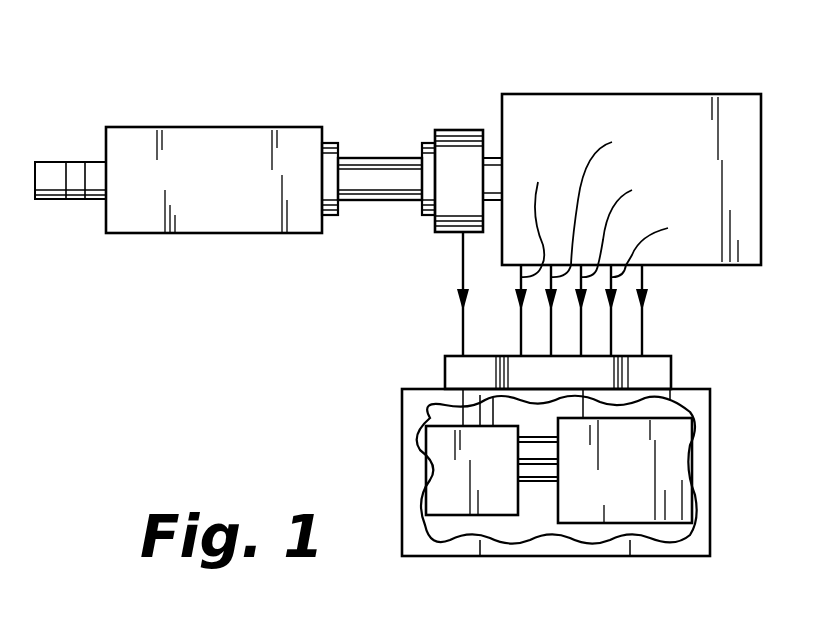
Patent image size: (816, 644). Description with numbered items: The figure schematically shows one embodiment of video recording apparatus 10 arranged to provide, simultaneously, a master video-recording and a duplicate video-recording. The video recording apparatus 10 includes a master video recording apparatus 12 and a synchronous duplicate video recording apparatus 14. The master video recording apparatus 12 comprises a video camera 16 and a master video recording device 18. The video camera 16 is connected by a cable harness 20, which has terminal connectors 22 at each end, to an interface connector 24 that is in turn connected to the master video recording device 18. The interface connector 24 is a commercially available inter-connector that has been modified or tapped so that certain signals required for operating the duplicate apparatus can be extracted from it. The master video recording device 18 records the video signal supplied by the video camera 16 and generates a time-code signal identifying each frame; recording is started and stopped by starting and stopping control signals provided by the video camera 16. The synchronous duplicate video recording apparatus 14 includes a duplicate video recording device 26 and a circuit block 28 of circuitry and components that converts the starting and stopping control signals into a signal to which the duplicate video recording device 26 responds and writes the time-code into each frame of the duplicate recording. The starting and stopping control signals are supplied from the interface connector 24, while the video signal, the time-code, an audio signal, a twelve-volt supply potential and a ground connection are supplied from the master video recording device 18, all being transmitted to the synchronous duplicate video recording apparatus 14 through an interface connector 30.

The video recording apparatus 10 is at (234, 390).
The master video recording apparatus 12 is at (340, 84).
The synchronous duplicate video recording apparatus 14 is at (390, 417).
The video camera 16 is at (211, 267).
The master video recording device 18 is at (605, 70).
The cable harness 20 is at (381, 157).
The terminal connectors 22 is at (330, 218).
The interface connector 24 is at (458, 130).
The duplicate video recording device 26 is at (632, 498).
The circuit block 28 is at (455, 497).
The interface connector 30 is at (684, 371).